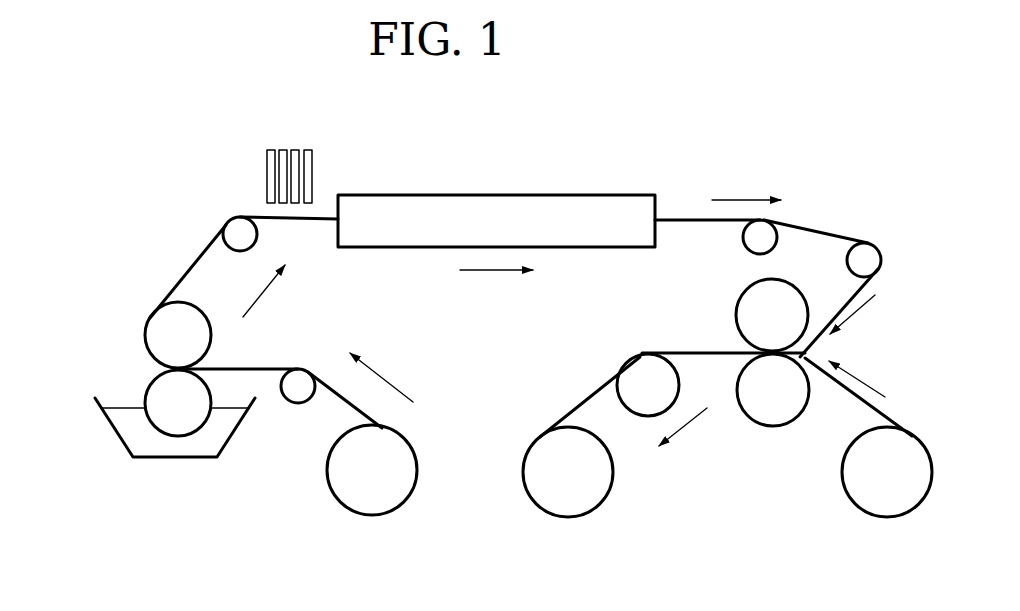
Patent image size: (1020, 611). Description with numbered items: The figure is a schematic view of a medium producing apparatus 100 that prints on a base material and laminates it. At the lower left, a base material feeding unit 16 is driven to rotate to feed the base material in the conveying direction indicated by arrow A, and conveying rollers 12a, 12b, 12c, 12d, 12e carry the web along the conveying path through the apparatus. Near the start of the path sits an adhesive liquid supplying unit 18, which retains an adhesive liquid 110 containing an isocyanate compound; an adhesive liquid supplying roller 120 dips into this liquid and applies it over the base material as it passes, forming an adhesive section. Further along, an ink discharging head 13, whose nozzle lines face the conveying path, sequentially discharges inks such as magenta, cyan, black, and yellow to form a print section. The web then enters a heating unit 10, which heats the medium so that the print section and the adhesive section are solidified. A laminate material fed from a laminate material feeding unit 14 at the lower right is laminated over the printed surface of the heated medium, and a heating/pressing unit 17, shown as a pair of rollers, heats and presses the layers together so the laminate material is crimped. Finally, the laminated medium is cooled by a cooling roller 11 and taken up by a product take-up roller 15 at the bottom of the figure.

The medium producing apparatus 100 is at (690, 167).
The heating unit 10 is at (487, 198).
The cooling roller 11 is at (642, 362).
The conveying roller 12a is at (295, 398).
The conveying roller 12b is at (158, 317).
The conveying roller 12c is at (238, 231).
The conveying roller 12d is at (768, 232).
The conveying roller 12e is at (870, 250).
The ink discharging head 13 is at (298, 140).
The laminate material feeding unit 14 is at (882, 518).
The product take-up roller 15 is at (568, 518).
The base material feeding unit 16 is at (368, 514).
The heating/pressing unit 17 is at (740, 373).
The adhesive liquid supplying unit 18 is at (167, 462).
The adhesive liquid 110 is at (218, 434).
The adhesive liquid supplying roller 120 is at (152, 392).